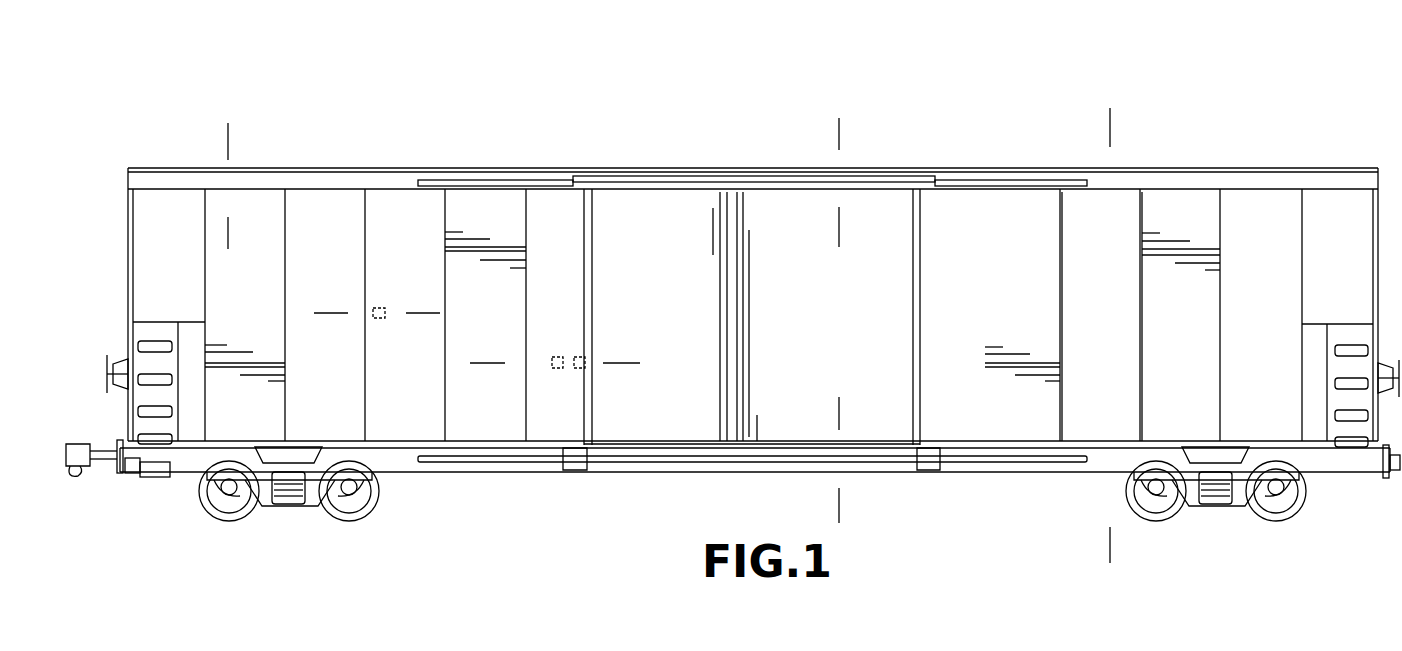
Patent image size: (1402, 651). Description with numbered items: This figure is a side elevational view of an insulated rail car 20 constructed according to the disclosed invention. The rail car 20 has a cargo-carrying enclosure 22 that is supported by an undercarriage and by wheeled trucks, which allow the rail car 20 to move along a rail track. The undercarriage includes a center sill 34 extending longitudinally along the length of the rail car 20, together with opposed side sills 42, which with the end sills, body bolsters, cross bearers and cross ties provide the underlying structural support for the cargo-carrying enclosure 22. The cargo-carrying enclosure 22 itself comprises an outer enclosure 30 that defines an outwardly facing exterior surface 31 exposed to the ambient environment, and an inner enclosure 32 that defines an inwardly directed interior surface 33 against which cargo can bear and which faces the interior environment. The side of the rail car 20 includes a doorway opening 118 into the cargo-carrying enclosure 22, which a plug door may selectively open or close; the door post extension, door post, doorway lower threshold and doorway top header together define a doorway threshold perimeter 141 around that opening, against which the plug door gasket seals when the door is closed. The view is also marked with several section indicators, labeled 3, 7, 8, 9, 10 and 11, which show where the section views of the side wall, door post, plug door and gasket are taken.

The insulated rail car 20 is at (1228, 108).
The cargo-carrying enclosure 22 is at (1322, 171).
The outer enclosure 30 is at (1115, 336).
The exterior surface 31 is at (1197, 336).
The inner enclosure 32 is at (702, 333).
The interior surface 33 is at (842, 333).
The center sill 34 is at (97, 464).
The side sills 42 is at (1103, 466).
The doorway opening 118 is at (681, 414).
The doorway threshold perimeter 141 is at (651, 192).
The section line 3- 3 is at (1058, 119).
The section line 7- 7 is at (330, 352).
The section line 8- 8 is at (174, 133).
The section line 9- 9 is at (490, 402).
The section line 10- 10 is at (787, 405).
The section line 11- 11 is at (787, 133).